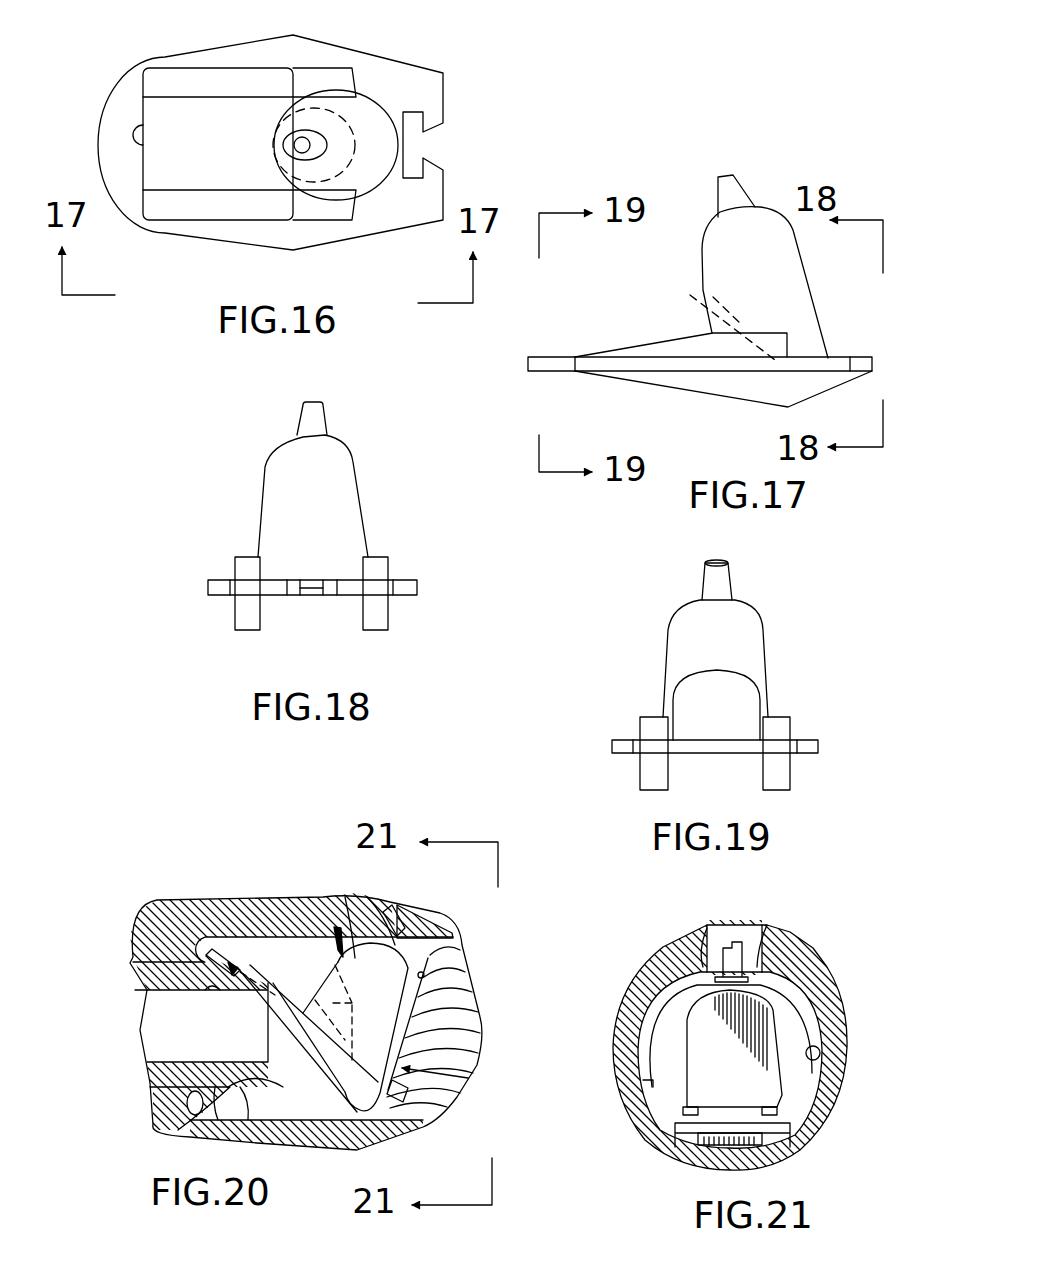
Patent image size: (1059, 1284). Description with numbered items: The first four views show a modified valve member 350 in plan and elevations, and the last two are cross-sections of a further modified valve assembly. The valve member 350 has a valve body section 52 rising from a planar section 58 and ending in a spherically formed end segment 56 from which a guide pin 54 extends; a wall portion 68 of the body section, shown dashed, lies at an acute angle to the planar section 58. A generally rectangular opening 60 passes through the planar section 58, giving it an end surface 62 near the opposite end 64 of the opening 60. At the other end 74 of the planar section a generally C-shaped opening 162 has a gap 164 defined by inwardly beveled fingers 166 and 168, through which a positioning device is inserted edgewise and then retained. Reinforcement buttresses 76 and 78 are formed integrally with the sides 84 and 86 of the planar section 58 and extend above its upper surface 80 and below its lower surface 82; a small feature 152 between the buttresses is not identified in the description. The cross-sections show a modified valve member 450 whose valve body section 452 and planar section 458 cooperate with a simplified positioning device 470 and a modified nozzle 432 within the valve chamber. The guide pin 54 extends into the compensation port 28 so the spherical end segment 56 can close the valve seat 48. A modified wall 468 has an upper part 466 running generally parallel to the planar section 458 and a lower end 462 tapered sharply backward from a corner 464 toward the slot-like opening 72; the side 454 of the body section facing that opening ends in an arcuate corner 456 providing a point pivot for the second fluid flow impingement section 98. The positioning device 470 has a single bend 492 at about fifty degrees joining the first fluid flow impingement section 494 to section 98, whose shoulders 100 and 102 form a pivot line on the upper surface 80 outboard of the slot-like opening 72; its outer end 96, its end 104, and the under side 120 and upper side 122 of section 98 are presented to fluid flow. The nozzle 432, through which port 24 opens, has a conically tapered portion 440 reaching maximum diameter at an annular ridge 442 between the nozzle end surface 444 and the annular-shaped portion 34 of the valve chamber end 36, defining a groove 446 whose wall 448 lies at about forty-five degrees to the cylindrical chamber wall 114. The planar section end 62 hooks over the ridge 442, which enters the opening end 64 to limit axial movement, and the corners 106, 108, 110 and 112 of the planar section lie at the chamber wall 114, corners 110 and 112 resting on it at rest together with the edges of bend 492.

In FIG. 16, the modified valve member 350 is at (127, 72).
In FIG. 17, the modified valve member 350 is at (695, 248).
In FIG. 18, the modified valve member 350 is at (247, 525).
In FIG. 19, the modified valve member 350 is at (662, 648).
In FIG. 16, the valve body section 52 is at (363, 107).
In FIG. 17, the valve body section 52 is at (783, 263).
In FIG. 18, the valve body section 52 is at (355, 475).
In FIG. 19, the valve body section 52 is at (753, 632).
In FIG. 16, the guide pin 54 is at (297, 140).
In FIG. 17, the guide pin 54 is at (728, 175).
In FIG. 18, the guide pin 54 is at (302, 422).
In FIG. 19, the guide pin 54 is at (723, 578).
In FIG. 20, the guide pin 54 is at (405, 918).
In FIG. 21, the guide pin 54 is at (735, 948).
In FIG. 16, the spherically formed end segment 56 is at (290, 168).
In FIG. 17, the spherically formed end segment 56 is at (710, 225).
In FIG. 18, the spherically formed end segment 56 is at (275, 452).
In FIG. 19, the spherically formed end segment 56 is at (687, 608).
In FIG. 20, the spherically formed end segment 56 is at (443, 937).
In FIG. 21, the spherically formed end segment 56 is at (753, 960).
In FIG. 16, the planar section 58 is at (202, 237).
In FIG. 17, the planar section 58 is at (600, 365).
In FIG. 18, the planar section 58 is at (238, 598).
In FIG. 16, the rectangular opening 60 is at (165, 113).
In FIG. 16, the end surface 62 is at (102, 173).
In FIG. 17, the end surface 62 is at (527, 363).
In FIG. 19, the end surface 62 is at (710, 755).
In FIG. 20, the end surface 62 is at (200, 940).
In FIG. 16, the opening end 64 is at (145, 145).
In FIG. 17, the opening end 64 is at (573, 355).
In FIG. 20, the opening end 64 is at (207, 990).
In FIG. 17, the wall portion 68 is at (697, 305).
In FIG. 19, the wall portion 68 is at (735, 692).
In FIG. 16, the planar section end 74 is at (435, 95).
In FIG. 17, the planar section end 74 is at (860, 355).
In FIG. 20, the planar section end 74 is at (423, 1110).
In FIG. 21, the planar section end 74 is at (677, 1150).
In FIG. 16, the reinforcement buttress 76 is at (203, 75).
In FIG. 18, the reinforcement buttress 76 is at (378, 618).
In FIG. 19, the reinforcement buttress 76 is at (655, 722).
In FIG. 16, the reinforcement buttress 78 is at (192, 208).
In FIG. 17, the reinforcement buttress 78 is at (680, 338).
In FIG. 18, the reinforcement buttress 78 is at (247, 618).
In FIG. 19, the reinforcement buttress 78 is at (777, 727).
In FIG. 16, the upper surface 80 is at (338, 233).
In FIG. 17, the upper surface 80 is at (645, 355).
In FIG. 18, the upper surface 80 is at (397, 583).
In FIG. 19, the upper surface 80 is at (627, 738).
In FIG. 21, the upper surface 80 is at (790, 1042).
In FIG. 17, the lower surface 82 is at (673, 373).
In FIG. 18, the lower surface 82 is at (407, 597).
In FIG. 19, the lower surface 82 is at (727, 755).
In FIG. 16, the side 84 is at (278, 47).
In FIG. 18, the side 84 is at (417, 588).
In FIG. 19, the side 84 is at (612, 746).
In FIG. 16, the side 86 is at (260, 247).
In FIG. 18, the side 86 is at (208, 587).
In FIG. 19, the side 86 is at (807, 755).
In FIG. 21, the side 86 is at (670, 1050).
In FIG. 18, the slot 152 is at (308, 598).
In FIG. 16, the C-shaped opening 162 is at (413, 138).
In FIG. 16, the gap 164 is at (435, 152).
In FIG. 16, the inwardly beveled finger 166 is at (433, 122).
In FIG. 18, the inwardly beveled finger 166 is at (332, 597).
In FIG. 16, the inwardly beveled finger 168 is at (433, 172).
In FIG. 18, the inwardly beveled finger 168 is at (290, 597).
In FIG. 20, the port 24 is at (150, 1020).
In FIG. 20, the compensation port 28 is at (390, 900).
In FIG. 21, the compensation port 28 is at (732, 927).
In FIG. 20, the annular-shaped end surface portion 34 is at (178, 1087).
In FIG. 20, the valve chamber end 36 is at (150, 980).
In FIG. 20, the valve seat 48 is at (367, 957).
In FIG. 21, the valve seat 48 is at (707, 947).
In FIG. 21, the slot-like opening 72 is at (800, 1093).
In FIG. 20, the outer end 96 is at (245, 970).
In FIG. 20, the second fluid flow impingement section 98 is at (463, 1033).
In FIG. 21, the second fluid flow impingement section 98 is at (760, 1030).
In FIG. 21, the shoulder 100 is at (680, 1130).
In FIG. 20, the shoulder 102 is at (448, 1100).
In FIG. 21, the shoulder 102 is at (787, 1127).
In FIG. 20, the end of positioning device 104 is at (437, 957).
In FIG. 21, the end of positioning device 104 is at (765, 980).
In FIG. 21, the corner 106 is at (650, 1080).
In FIG. 21, the corner 108 is at (820, 1082).
In FIG. 21, the corner 110 is at (693, 1123).
In FIG. 21, the corner 112 is at (790, 1133).
In FIG. 21, the cylindrical wall surface 114 is at (821, 1050).
In FIG. 20, the under side 120 is at (425, 975).
In FIG. 21, the under side 120 is at (710, 1120).
In FIG. 20, the upper side 122 is at (437, 993).
In FIG. 20, the modified nozzle 432 is at (250, 1060).
In FIG. 20, the conically tapered portion 440 is at (240, 1087).
In FIG. 20, the annular ridge 442 is at (247, 1123).
In FIG. 20, the nozzle end surface 444 is at (272, 1063).
In FIG. 20, the groove 446 is at (193, 1130).
In FIG. 20, the groove wall 448 is at (218, 1120).
In FIG. 20, the modified valve member 450 is at (340, 930).
In FIG. 21, the modified valve member 450 is at (687, 983).
In FIG. 20, the valve body section 452 is at (383, 905).
In FIG. 20, the side 454 is at (467, 1057).
In FIG. 20, the arcuate corner 456 is at (453, 1013).
In FIG. 20, the planar section 458 is at (262, 985).
In FIG. 21, the planar section 458 is at (640, 1043).
In FIG. 20, the lower end of wall 462 is at (338, 1087).
In FIG. 20, the corner 464 is at (343, 1047).
In FIG. 20, the upper part of wall 466 is at (345, 975).
In FIG. 20, the modified wall 468 is at (338, 993).
In FIG. 20, the positioning device 470 is at (455, 1080).
In FIG. 21, the positioning device 470 is at (680, 1005).
In FIG. 20, the bend 492 is at (378, 1142).
In FIG. 21, the bend 492 is at (747, 1167).
In FIG. 20, the first fluid flow impingement section 494 is at (293, 1025).